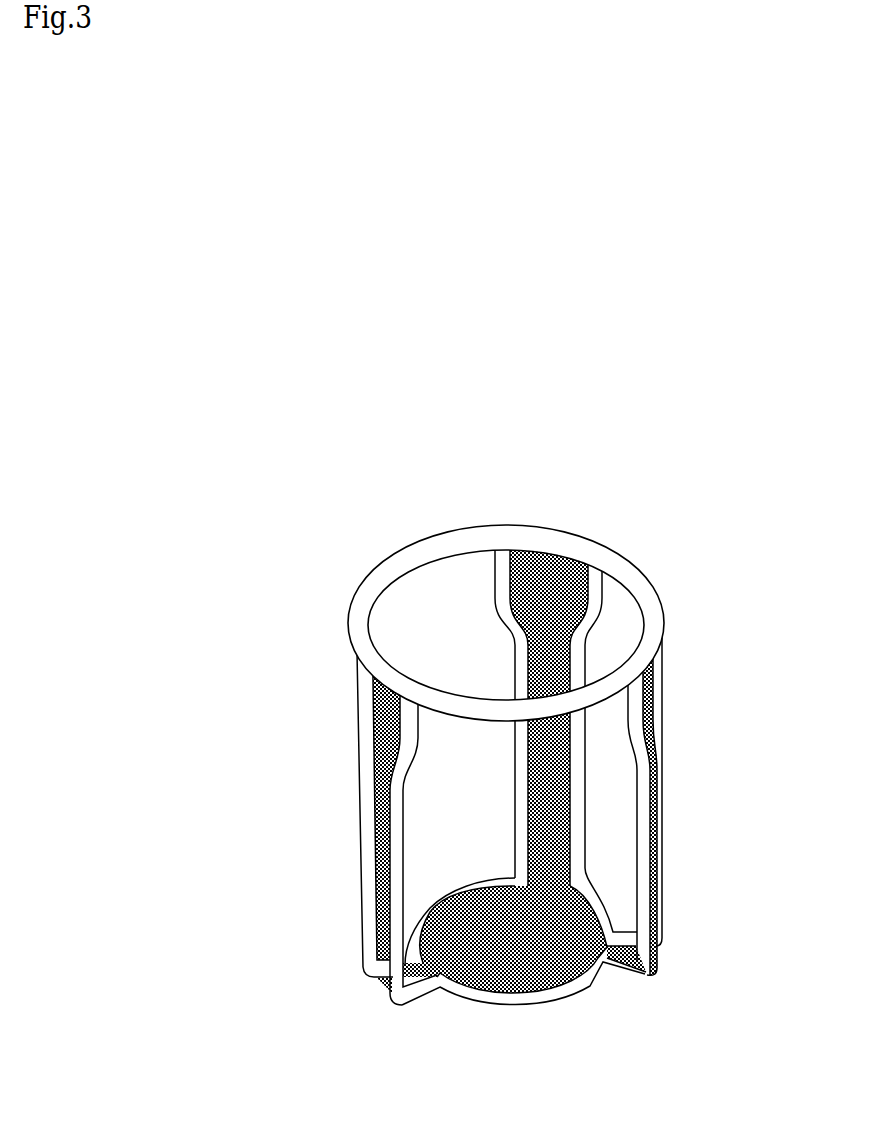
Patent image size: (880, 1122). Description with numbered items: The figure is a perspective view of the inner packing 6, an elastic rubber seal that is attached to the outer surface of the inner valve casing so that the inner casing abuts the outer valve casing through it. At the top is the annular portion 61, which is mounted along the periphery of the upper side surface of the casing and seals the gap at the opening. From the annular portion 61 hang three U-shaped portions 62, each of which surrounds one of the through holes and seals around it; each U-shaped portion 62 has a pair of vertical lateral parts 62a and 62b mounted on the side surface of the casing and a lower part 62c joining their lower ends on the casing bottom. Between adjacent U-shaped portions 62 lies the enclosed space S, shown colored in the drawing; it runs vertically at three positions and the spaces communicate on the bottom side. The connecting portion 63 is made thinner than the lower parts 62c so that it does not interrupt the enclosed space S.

The inner packing 6 is at (353, 600).
The annular portion 61 is at (422, 541).
The U-shaped portion 62 is at (362, 765).
The lateral part 62a is at (393, 878).
The lateral part 62b is at (645, 877).
The lower part 62c is at (553, 1000).
The connecting portion 63 is at (533, 880).
The enclosed space S is at (537, 562).